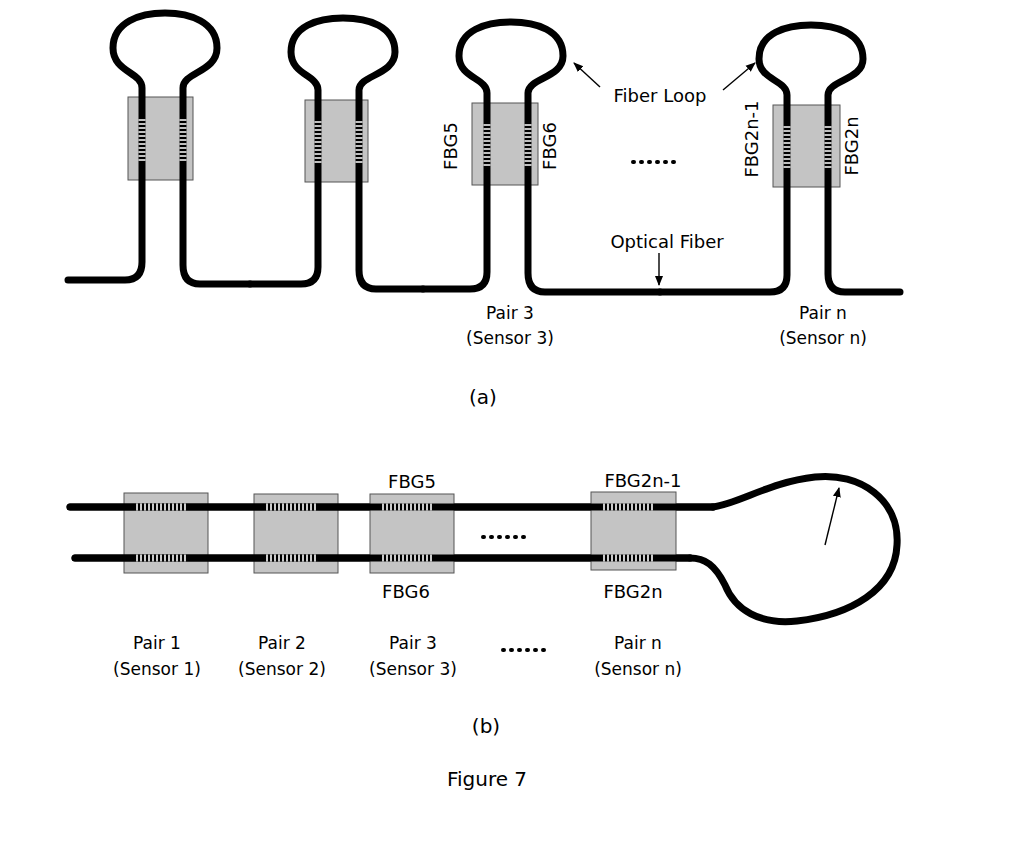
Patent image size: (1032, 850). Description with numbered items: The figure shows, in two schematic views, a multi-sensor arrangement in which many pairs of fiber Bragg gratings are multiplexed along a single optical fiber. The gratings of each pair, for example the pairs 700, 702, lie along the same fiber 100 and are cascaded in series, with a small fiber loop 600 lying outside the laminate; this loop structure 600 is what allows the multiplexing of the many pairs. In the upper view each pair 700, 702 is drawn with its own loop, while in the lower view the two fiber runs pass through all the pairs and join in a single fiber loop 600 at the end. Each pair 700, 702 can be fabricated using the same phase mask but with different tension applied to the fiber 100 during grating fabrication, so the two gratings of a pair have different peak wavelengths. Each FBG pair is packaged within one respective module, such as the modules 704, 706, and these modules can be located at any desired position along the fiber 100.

The fiber 100 is at (89, 554).
The fiber loop 600 is at (841, 471).
The pair of FBGs 700 is at (114, 107).
The pair of FBGs 702 is at (286, 106).
The module 704 is at (120, 566).
The module 706 is at (258, 568).